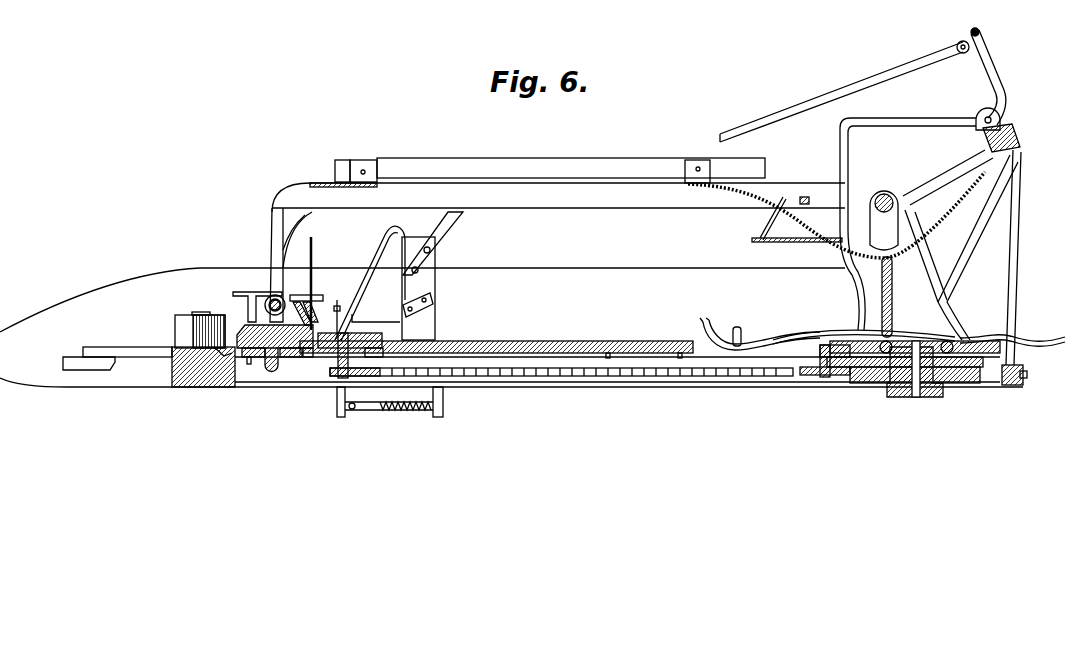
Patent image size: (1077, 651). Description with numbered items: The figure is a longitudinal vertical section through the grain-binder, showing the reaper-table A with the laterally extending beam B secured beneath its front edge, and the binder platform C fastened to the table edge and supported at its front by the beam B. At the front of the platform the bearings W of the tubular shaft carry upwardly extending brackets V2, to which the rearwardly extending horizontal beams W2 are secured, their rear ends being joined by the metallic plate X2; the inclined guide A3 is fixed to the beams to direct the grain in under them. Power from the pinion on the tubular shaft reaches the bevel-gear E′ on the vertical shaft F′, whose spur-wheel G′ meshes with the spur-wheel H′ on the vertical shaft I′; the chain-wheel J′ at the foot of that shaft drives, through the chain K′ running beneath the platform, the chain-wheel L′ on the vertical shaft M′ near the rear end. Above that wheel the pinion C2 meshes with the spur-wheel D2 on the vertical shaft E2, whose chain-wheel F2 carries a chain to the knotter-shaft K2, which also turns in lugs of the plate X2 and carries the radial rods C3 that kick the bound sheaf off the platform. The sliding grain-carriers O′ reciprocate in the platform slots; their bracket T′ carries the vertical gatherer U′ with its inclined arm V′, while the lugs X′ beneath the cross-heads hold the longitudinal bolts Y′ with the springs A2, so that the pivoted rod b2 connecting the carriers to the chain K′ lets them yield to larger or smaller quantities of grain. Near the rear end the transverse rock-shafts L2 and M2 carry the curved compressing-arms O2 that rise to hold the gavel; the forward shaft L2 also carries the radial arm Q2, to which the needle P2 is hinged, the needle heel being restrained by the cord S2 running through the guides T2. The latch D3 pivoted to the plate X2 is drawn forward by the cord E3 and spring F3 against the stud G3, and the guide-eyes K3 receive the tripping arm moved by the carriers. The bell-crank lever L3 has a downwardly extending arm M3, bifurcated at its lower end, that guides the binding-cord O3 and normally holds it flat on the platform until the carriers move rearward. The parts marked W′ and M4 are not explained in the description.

The reaper-table A is at (511, 285).
The springs A2 is at (412, 404).
The inclined guide A3 is at (537, 172).
The beam B is at (205, 387).
The binder platform C is at (496, 344).
The pinion C2 is at (876, 358).
The radial rods C3 is at (221, 358).
The spur-wheel D2 is at (880, 372).
The latch D3 is at (810, 203).
The bevel-gear E′ is at (262, 356).
The vertical shaft E2 is at (912, 395).
The cord E3 is at (759, 218).
The vertical shaft F′ is at (272, 370).
The chain-wheel F2 is at (893, 393).
The spring F3 is at (797, 248).
The spur-wheel G′ is at (290, 335).
The stud G3 is at (803, 206).
The spur-wheel H′ is at (384, 343).
The vertical shaft I′ is at (340, 340).
The chain-wheel J′ is at (357, 365).
The chain K′ is at (530, 372).
The knotter-shaft K2 is at (872, 204).
The guide-eyes K3 is at (865, 84).
The chain-wheel L′ is at (803, 372).
The transverse rock-shaft L2 is at (893, 340).
The bell-crank lever L3 is at (995, 90).
The vertical shaft M′ is at (826, 378).
The transverse rock-shaft M2 is at (950, 340).
The downwardly-extending arm M3 is at (836, 170).
The rod M4 is at (892, 290).
The grain-carriers O′ is at (380, 262).
The curved arms O2 is at (899, 331).
The binding-cord O3 is at (642, 358).
The needle P2 is at (182, 331).
The arm Q2 is at (823, 333).
The cord S2 is at (858, 340).
The bracket T′ is at (432, 302).
The eyes or guides T2 is at (1028, 375).
The gatherer U′ is at (428, 276).
The inclined arm V′ is at (452, 233).
The brackets V2 is at (272, 250).
The bearings W is at (268, 298).
The bracket foot W′ is at (376, 308).
The horizontal beams W2 is at (583, 195).
The lugs X′ is at (440, 412).
The metallic plate X2 is at (790, 197).
The longitudinal bolts Y′ is at (405, 415).
The pivoted rod b2 is at (1020, 350).